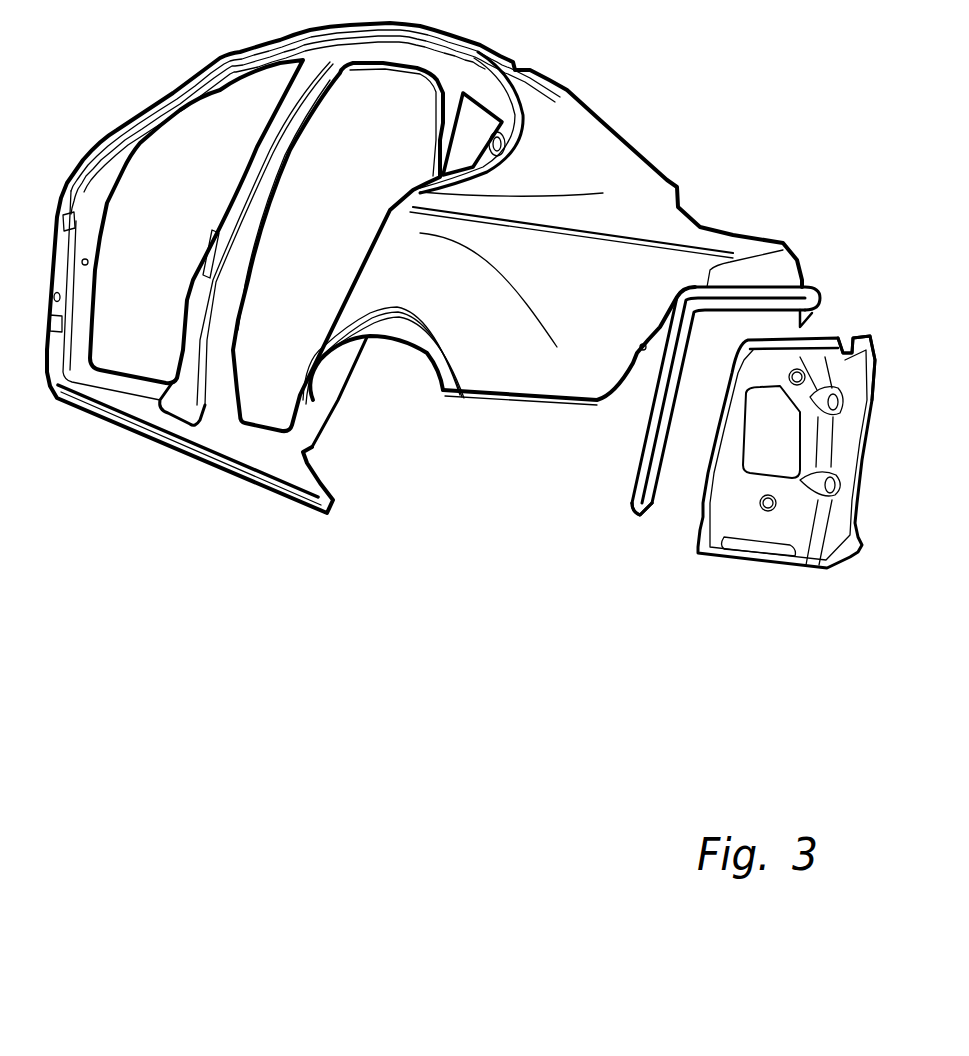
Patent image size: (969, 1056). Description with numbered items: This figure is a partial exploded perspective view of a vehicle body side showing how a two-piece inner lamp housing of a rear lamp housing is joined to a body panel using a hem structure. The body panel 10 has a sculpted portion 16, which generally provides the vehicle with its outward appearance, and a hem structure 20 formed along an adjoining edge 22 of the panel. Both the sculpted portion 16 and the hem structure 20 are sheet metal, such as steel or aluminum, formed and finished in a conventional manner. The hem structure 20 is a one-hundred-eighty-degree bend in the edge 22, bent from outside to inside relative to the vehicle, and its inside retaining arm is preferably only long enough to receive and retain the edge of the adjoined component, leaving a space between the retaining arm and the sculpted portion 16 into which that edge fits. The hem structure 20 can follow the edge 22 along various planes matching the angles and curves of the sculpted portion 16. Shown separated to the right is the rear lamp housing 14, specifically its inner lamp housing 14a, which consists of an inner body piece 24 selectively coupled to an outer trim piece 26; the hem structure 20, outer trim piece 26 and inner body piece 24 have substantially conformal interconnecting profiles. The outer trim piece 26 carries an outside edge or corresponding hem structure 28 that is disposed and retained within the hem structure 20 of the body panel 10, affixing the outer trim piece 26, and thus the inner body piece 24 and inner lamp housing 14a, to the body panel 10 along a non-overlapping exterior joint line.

The body panel 10 is at (718, 206).
The rear lamp housing 14 is at (786, 527).
The inner lamp housing 14a is at (786, 452).
The sculpted portion 16 is at (570, 323).
The hem structure 20 is at (569, 440).
The adjoining edge 22 is at (617, 412).
The inner body piece 24 is at (863, 315).
The outer trim piece 26 is at (810, 270).
The corresponding hem structure 28 is at (627, 512).